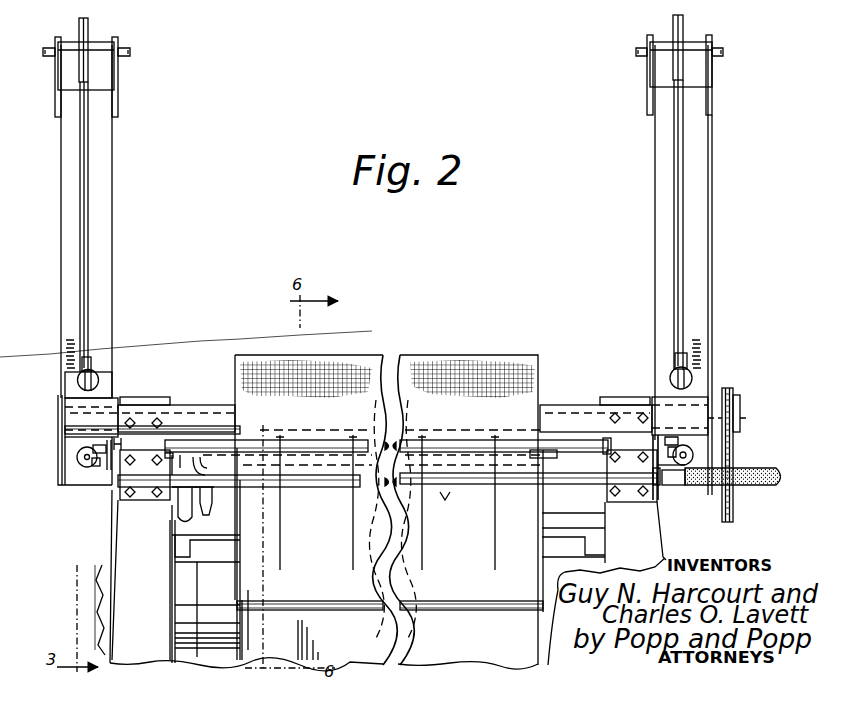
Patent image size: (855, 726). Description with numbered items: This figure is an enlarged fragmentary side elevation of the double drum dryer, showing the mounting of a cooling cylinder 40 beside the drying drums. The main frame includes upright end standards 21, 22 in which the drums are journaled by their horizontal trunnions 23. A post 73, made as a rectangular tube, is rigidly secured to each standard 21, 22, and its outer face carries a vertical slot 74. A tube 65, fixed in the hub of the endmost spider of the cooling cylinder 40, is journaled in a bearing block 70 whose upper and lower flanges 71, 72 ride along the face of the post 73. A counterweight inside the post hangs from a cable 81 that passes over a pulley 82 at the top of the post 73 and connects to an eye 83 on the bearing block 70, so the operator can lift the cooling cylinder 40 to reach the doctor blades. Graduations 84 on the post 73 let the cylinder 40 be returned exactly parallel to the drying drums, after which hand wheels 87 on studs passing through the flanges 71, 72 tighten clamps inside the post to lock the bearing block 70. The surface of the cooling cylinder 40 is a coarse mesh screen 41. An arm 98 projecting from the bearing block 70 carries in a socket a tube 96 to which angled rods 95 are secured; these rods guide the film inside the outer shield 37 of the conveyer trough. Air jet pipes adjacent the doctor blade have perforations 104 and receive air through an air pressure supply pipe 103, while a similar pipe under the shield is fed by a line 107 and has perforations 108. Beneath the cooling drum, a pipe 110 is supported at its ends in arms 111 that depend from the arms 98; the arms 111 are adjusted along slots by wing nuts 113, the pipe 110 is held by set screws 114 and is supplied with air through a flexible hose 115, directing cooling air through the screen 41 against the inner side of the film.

The pulley 82 is at (88, 25).
The cable 81 is at (88, 165).
The post 73 is at (100, 253).
The vertical slot 74 is at (82, 283).
The graduations 84 is at (65, 347).
The hand wheel 87 is at (98, 373).
The eye 83 is at (106, 380).
The upper flange 71 is at (67, 377).
The bearing block 70 is at (75, 392).
The lower flange 72 is at (68, 460).
The arm 98 is at (117, 472).
The upright end standard 21 is at (150, 382).
The upright end standard 22 is at (641, 380).
The tube 65 is at (220, 387).
The trunnion 23 is at (185, 590).
The cooling cylinder 40 is at (407, 350).
The coarse mesh screen 41 is at (498, 370).
The perforations 104 is at (302, 440).
The tube or pipe 96 is at (340, 440).
The pipe 110 is at (598, 476).
The rods 95 is at (352, 554).
The perforations 108 is at (447, 503).
The air pressure supply pipe 103 is at (178, 510).
The line 107 is at (196, 516).
The outer shield or panel 37 is at (450, 628).
The wing nut 113 is at (690, 441).
The arm 111 is at (655, 462).
The set screw 114 is at (660, 497).
The flexible hose 115 is at (756, 488).